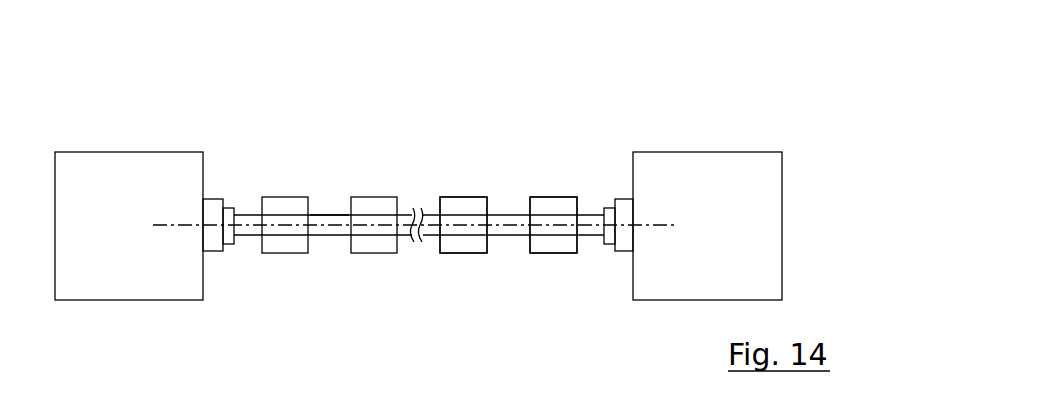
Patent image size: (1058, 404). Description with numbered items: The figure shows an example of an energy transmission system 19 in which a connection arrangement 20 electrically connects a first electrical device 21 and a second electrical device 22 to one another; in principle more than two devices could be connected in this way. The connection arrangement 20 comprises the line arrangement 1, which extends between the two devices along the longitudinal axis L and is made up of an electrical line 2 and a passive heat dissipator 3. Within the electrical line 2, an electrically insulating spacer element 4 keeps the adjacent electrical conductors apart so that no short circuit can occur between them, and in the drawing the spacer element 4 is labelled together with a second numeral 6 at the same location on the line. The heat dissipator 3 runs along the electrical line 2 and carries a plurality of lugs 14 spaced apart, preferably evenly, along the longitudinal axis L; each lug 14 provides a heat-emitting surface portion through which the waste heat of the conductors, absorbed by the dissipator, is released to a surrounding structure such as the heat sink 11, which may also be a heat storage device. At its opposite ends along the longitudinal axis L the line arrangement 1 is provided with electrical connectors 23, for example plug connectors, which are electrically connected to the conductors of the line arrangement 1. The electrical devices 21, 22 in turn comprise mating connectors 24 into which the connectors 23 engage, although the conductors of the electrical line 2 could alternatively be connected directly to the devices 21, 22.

The line arrangement 1 is at (548, 194).
The electrical line 2 is at (506, 209).
The passive heat dissipator 3 is at (450, 196).
The electrically insulating spacer element 4 is at (323, 184).
The shaft section 6 is at (340, 212).
The heat sink 11 is at (403, 138).
The lugs 14 is at (280, 247).
The energy transmission system 19 is at (698, 89).
The connection arrangement 20 is at (598, 139).
The first electrical device 21 is at (122, 238).
The second electrical device 22 is at (747, 238).
The electrical connectors 23 is at (225, 205).
The mating connectors 24 is at (213, 247).
The longitudinal axis L is at (651, 222).